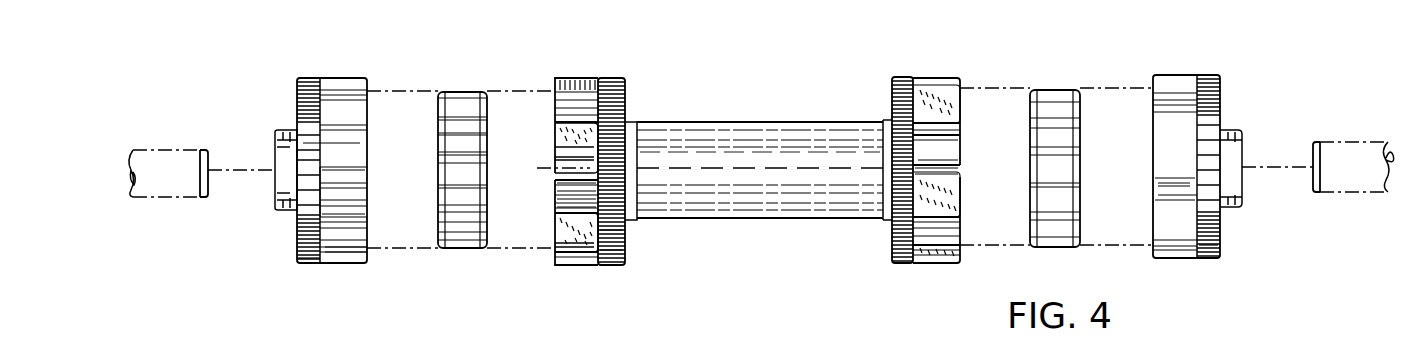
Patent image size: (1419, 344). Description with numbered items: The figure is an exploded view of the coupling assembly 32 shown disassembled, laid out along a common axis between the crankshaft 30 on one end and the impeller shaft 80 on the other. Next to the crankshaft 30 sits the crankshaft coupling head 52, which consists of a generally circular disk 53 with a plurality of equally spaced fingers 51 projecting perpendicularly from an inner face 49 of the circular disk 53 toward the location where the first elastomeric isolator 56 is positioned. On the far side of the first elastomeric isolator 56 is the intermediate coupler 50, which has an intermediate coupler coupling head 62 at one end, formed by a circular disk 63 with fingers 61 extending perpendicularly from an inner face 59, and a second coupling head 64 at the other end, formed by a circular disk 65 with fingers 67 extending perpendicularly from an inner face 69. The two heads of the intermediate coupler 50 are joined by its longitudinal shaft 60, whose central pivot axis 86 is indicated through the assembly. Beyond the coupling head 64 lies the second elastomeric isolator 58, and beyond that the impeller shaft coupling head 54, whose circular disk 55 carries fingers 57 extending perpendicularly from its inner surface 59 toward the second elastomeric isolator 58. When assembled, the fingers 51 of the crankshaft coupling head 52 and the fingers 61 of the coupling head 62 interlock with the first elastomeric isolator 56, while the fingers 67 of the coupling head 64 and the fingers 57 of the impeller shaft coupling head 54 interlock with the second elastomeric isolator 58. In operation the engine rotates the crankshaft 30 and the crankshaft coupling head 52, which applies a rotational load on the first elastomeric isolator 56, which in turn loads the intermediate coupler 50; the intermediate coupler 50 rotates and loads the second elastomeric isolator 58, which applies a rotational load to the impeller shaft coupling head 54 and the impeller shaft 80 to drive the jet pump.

The crankshaft 30 is at (183, 156).
The coupling assembly 32 is at (1244, 32).
The inner face 49 is at (340, 183).
The intermediate coupler 50 is at (715, 122).
The fingers 51 is at (353, 238).
The crankshaft coupling head 52 is at (310, 78).
The circular disk 53 is at (307, 268).
The impeller shaft coupling head 54 is at (1210, 75).
The circular disk 55 is at (1210, 258).
The first elastomeric isolator 56 is at (470, 92).
The fingers 57 is at (1163, 193).
The second elastomeric isolator 58 is at (1070, 90).
The inner face 59 is at (557, 147).
The longitudinal shaft 60 is at (820, 153).
The fingers 61 is at (557, 192).
The intermediate coupler coupling head 62 is at (617, 80).
The circular disk 63 is at (613, 245).
The coupling head 64 is at (905, 77).
The circular disk 65 is at (905, 257).
The fingers 67 is at (948, 232).
The inner face 69 is at (955, 170).
The impeller shaft 80 is at (1357, 153).
The central pivot axis 86 is at (772, 167).